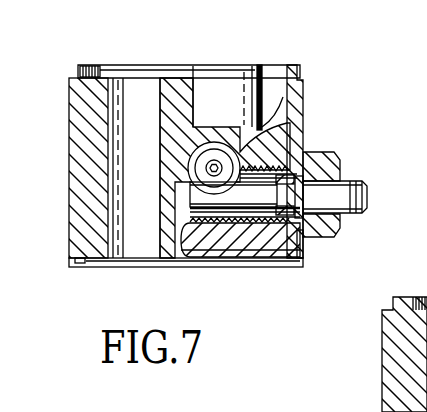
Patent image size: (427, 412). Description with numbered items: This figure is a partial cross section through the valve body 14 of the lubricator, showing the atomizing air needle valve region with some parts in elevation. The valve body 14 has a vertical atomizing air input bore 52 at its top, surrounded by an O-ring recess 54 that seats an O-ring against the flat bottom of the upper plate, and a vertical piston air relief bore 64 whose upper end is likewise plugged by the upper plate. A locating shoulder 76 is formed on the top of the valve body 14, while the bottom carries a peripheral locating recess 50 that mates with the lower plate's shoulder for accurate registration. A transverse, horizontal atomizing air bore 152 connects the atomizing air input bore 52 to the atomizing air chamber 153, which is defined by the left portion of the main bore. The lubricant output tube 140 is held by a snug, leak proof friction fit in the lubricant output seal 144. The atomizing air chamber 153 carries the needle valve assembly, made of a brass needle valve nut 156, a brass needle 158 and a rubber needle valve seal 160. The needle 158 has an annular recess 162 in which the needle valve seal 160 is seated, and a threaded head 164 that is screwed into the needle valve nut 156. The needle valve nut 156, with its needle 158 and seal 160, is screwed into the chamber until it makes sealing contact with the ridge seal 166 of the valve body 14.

The valve body 14 is at (69, 173).
The peripheral locating recess 50 is at (82, 266).
The vertical atomizing air input bore 52 is at (137, 90).
The O-ring recess 54 is at (178, 66).
The vertical piston air relief bore 64 is at (247, 57).
The locating shoulder 76 is at (78, 67).
The lubricant output tube 140 is at (206, 170).
The lubricant output seal 144 is at (220, 128).
The transverse horizontal atomizing air bore 152 is at (161, 198).
The atomizing air chamber 153 is at (180, 258).
The needle valve nut 156 is at (342, 229).
The needle 158 is at (212, 200).
The needle valve seal 160 is at (303, 153).
The annular recess 162 is at (266, 223).
The threaded head 164 is at (364, 187).
The ridge seal 166 is at (302, 258).